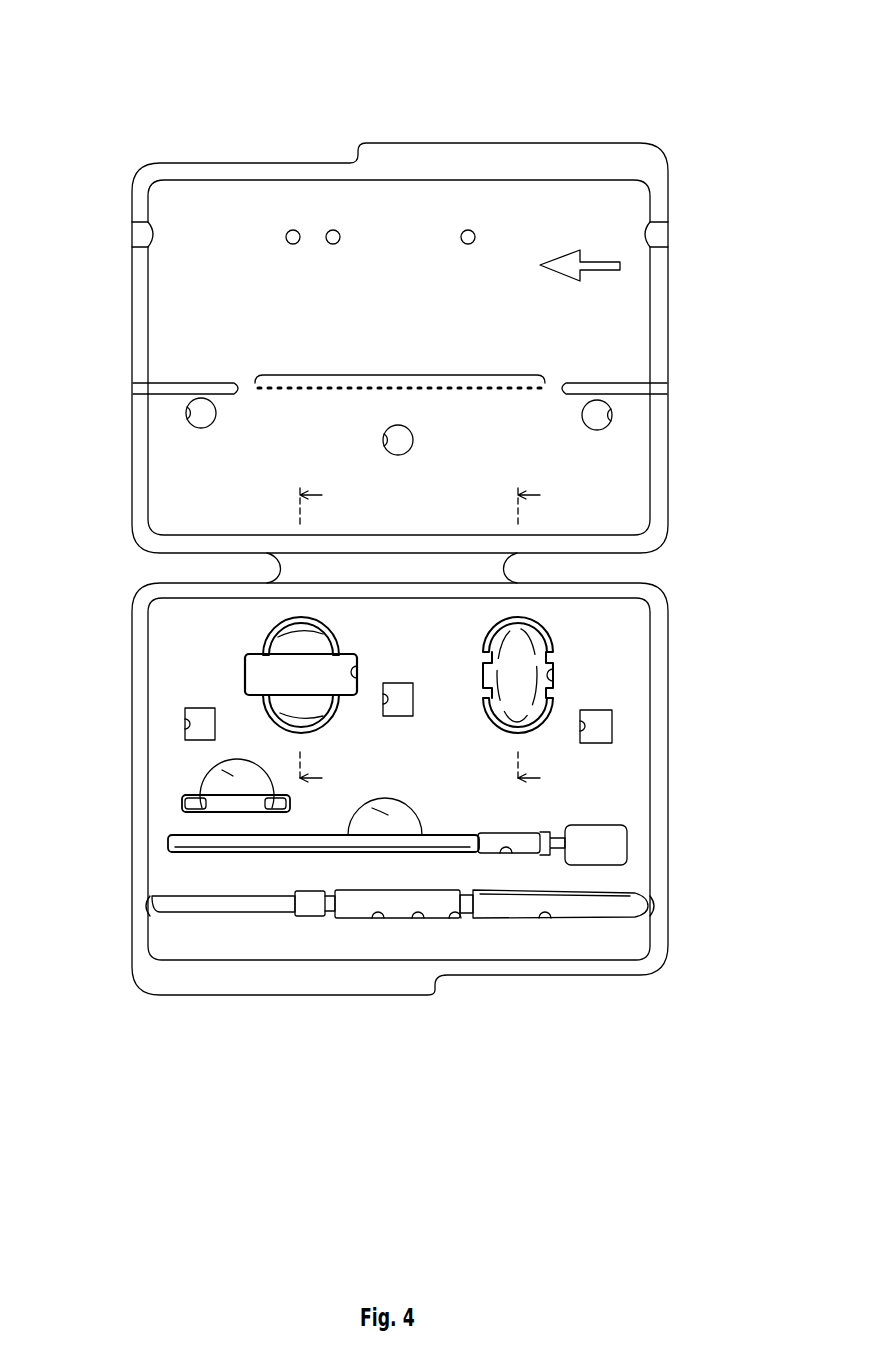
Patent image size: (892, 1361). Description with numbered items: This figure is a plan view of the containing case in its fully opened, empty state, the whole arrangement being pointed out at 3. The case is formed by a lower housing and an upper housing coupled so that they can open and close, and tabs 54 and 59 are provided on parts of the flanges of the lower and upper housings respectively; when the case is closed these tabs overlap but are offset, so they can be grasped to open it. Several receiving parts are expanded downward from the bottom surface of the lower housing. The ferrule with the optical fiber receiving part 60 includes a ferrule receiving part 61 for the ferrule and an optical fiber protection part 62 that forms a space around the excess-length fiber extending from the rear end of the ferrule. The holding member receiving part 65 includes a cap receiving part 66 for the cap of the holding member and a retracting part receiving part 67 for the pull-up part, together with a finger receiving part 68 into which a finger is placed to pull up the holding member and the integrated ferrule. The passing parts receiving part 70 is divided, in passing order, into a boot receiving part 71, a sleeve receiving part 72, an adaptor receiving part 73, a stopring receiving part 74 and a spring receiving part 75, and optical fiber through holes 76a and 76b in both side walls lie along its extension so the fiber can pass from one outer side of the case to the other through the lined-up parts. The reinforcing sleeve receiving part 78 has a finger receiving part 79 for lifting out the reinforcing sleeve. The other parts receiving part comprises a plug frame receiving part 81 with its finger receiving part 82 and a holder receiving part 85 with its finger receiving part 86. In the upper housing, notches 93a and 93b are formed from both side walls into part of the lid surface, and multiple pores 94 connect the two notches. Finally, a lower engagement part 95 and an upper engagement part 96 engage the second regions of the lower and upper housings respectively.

The case 3 is at (573, 62).
The tab 59 is at (500, 143).
The tab 54 is at (233, 985).
The optical fiber through hole 76a is at (650, 238).
The optical fiber through hole 76b is at (148, 238).
The notch 93a is at (148, 386).
The notch 93b is at (652, 388).
The pores 94 is at (400, 363).
The upper engagement part 96 is at (188, 420).
The lower engagement part 95 is at (383, 712).
The ferrule with the optical fiber receiving part 60 is at (499, 739).
The plug frame receiving part 81 is at (548, 680).
The finger receiving part 82 is at (357, 672).
The holder receiving part 85 is at (525, 647).
The finger receiving part 86 is at (305, 643).
The ferrule receiving part 61 is at (555, 832).
The optical fiber protection part 62 is at (600, 862).
The finger receiving part 79 is at (233, 773).
The reinforcing sleeve receiving part 78 is at (185, 802).
The holding member receiving part 65 is at (287, 846).
The finger receiving part 68 is at (372, 824).
The retracting part receiving part 67 is at (270, 845).
The cap receiving part 66 is at (505, 852).
The passing parts receiving part 70 is at (400, 983).
The boot receiving part 71 is at (560, 963).
The sleeve receiving part 72 is at (455, 918).
The adaptor receiving part 73 is at (418, 918).
The stopring receiving part 74 is at (378, 918).
The spring receiving part 75 is at (314, 918).